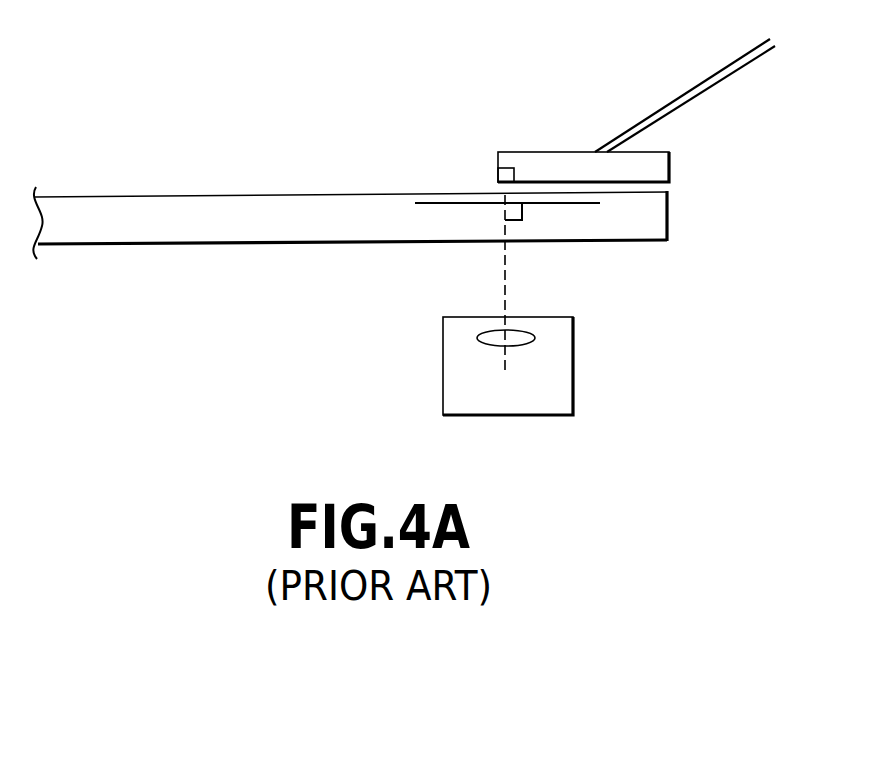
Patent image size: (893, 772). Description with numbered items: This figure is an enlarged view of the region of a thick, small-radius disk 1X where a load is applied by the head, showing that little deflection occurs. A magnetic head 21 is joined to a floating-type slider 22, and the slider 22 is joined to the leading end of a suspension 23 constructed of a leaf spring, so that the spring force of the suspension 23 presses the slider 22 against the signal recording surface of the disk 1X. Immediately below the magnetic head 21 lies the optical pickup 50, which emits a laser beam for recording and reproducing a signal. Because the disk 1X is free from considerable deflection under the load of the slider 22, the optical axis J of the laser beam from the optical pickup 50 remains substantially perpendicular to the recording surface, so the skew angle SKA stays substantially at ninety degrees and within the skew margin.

The disk 1X is at (222, 228).
The magnetic head 21 is at (498, 173).
The slider 22 is at (672, 158).
The suspension 23 is at (683, 95).
The projection lens (optical system) 50 is at (552, 362).
The skew angle SKA is at (523, 212).
The optical axis J is at (505, 268).